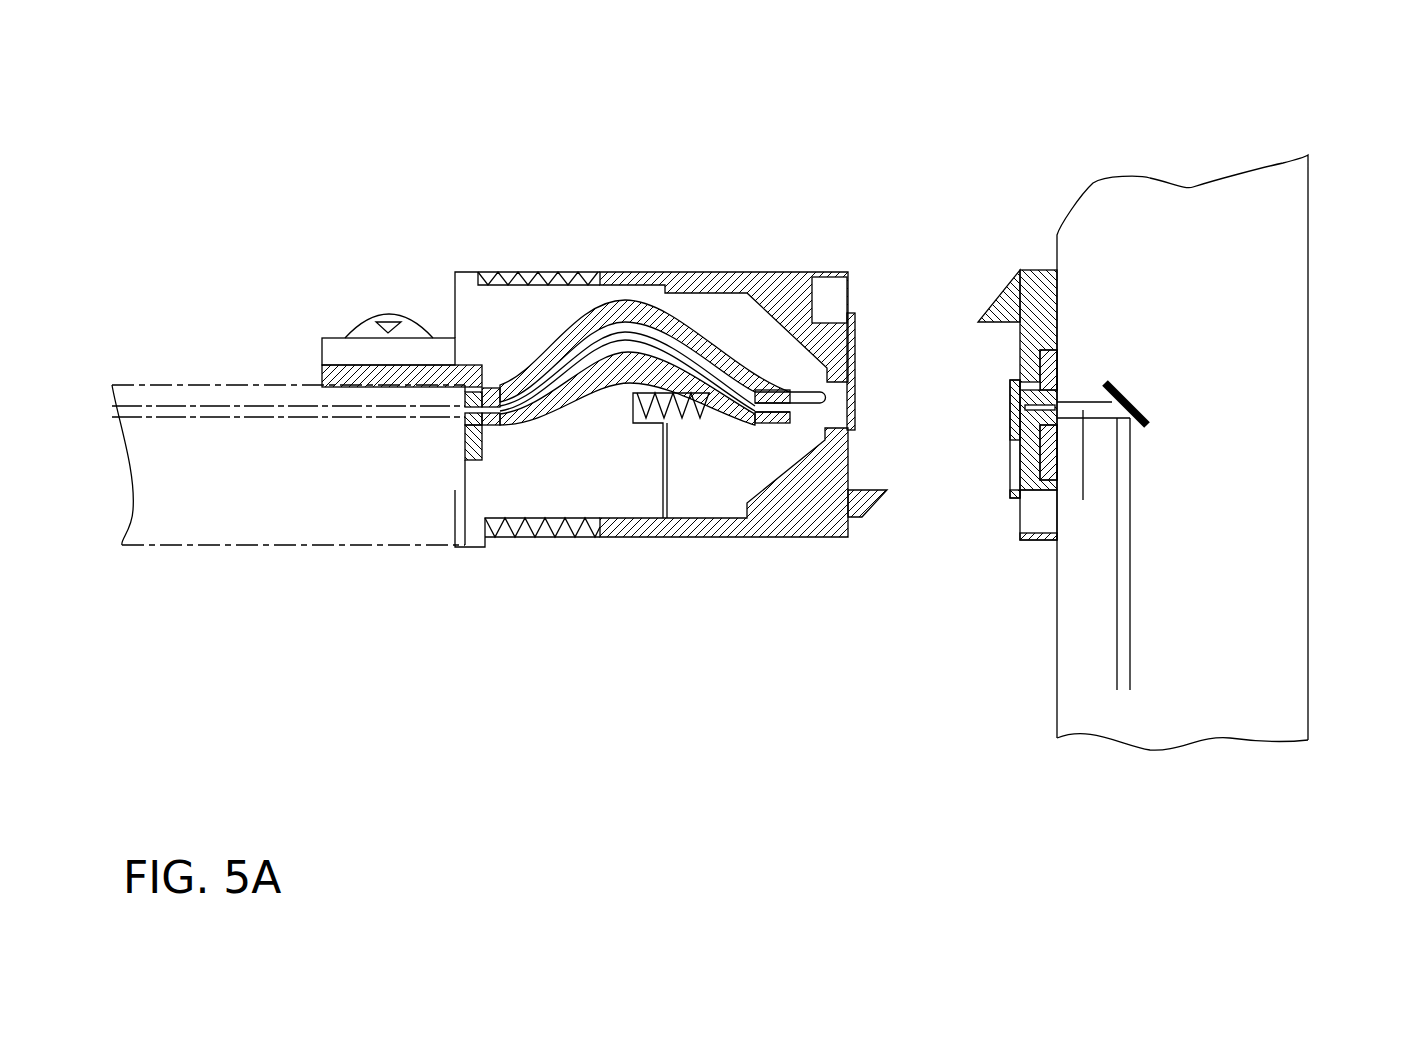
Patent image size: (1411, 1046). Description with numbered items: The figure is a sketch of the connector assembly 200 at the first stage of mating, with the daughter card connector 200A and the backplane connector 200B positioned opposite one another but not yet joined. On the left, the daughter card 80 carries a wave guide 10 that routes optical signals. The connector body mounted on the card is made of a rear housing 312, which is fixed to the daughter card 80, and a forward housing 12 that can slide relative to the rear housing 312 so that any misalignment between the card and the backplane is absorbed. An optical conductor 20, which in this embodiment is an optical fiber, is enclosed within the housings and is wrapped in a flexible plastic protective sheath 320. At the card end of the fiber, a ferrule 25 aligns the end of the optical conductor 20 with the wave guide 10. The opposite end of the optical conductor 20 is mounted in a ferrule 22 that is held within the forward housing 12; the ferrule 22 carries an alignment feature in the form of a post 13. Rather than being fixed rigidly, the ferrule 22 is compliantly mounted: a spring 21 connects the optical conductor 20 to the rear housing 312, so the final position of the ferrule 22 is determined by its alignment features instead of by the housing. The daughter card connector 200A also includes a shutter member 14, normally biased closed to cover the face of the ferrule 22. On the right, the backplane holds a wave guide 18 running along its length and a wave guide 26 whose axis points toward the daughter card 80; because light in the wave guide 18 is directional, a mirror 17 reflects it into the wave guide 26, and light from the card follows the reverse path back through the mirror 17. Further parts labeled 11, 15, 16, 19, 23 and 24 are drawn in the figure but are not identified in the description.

The wave guide 10 is at (240, 410).
The daughter card connector mount 11 is at (357, 365).
The forward housing 12 is at (790, 270).
The post 13 is at (802, 393).
The shutter member 14 is at (855, 400).
The back plane receptacle 15 is at (1018, 383).
The back plane 16 is at (1057, 402).
The mirror 17 is at (1137, 402).
The wave guide 18 is at (1120, 537).
The solder joint 19 is at (462, 416).
The optical conductor 20 is at (625, 345).
The spring 21 is at (688, 420).
The ferrule 22 is at (775, 433).
The retaining ring 23 is at (798, 407).
The shield plate 24 is at (1010, 423).
The ferrule 25 is at (483, 427).
The wave guide 26 is at (1083, 480).
The daughter card 80 is at (256, 476).
The connector assembly 200 is at (1043, 117).
The daughter card connector 200A is at (562, 735).
The backplane connector 200B is at (933, 777).
The rear housing 312 is at (525, 317).
The protective sheath 320 is at (590, 322).